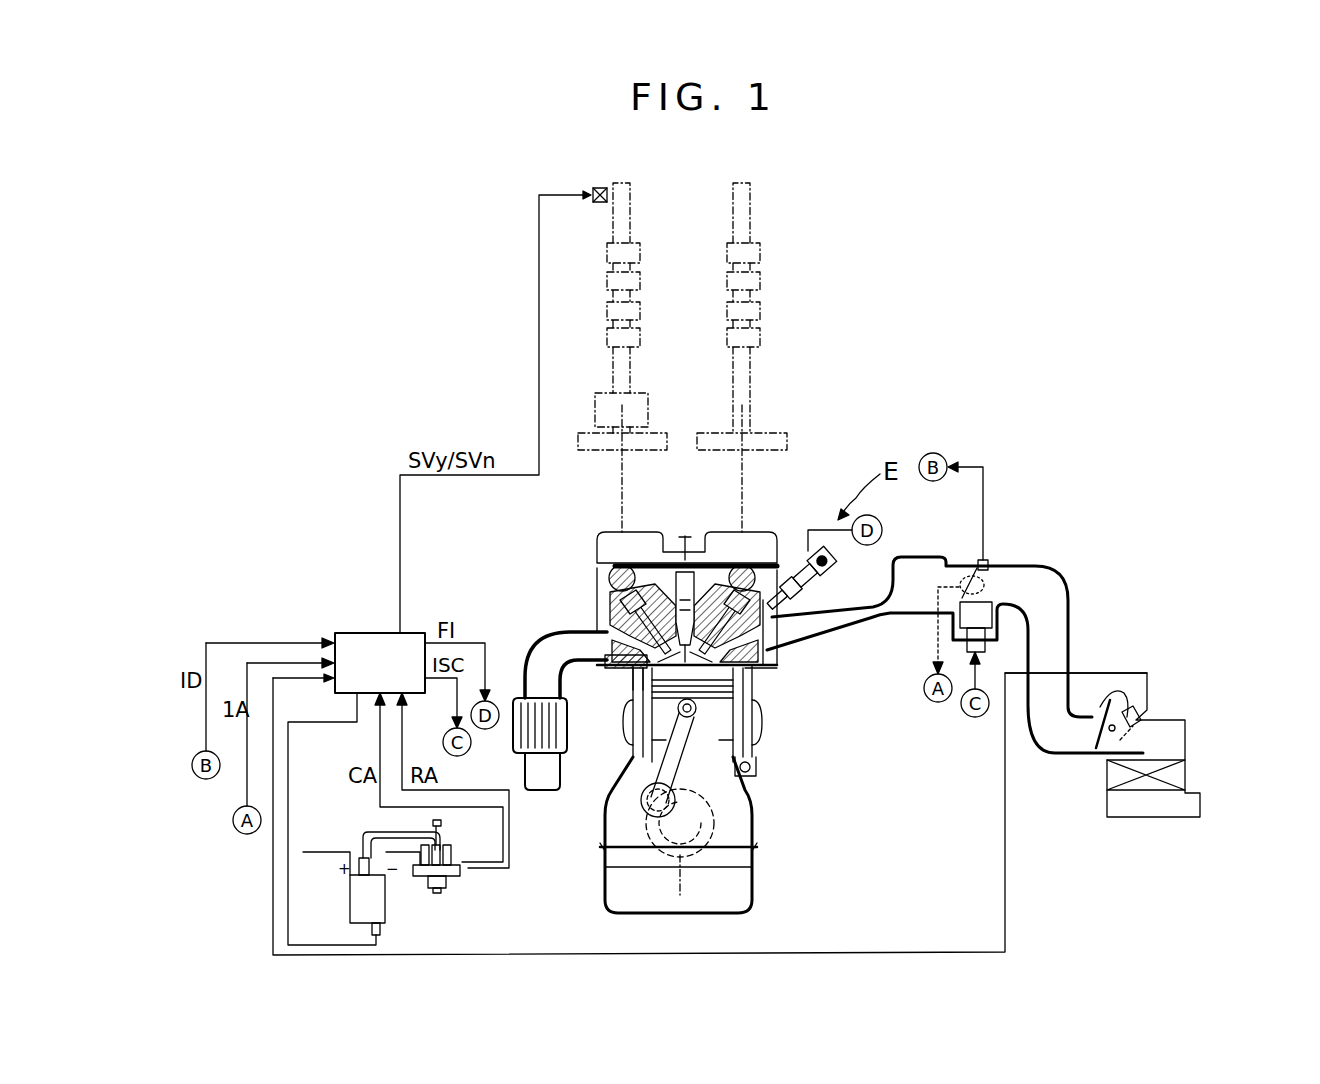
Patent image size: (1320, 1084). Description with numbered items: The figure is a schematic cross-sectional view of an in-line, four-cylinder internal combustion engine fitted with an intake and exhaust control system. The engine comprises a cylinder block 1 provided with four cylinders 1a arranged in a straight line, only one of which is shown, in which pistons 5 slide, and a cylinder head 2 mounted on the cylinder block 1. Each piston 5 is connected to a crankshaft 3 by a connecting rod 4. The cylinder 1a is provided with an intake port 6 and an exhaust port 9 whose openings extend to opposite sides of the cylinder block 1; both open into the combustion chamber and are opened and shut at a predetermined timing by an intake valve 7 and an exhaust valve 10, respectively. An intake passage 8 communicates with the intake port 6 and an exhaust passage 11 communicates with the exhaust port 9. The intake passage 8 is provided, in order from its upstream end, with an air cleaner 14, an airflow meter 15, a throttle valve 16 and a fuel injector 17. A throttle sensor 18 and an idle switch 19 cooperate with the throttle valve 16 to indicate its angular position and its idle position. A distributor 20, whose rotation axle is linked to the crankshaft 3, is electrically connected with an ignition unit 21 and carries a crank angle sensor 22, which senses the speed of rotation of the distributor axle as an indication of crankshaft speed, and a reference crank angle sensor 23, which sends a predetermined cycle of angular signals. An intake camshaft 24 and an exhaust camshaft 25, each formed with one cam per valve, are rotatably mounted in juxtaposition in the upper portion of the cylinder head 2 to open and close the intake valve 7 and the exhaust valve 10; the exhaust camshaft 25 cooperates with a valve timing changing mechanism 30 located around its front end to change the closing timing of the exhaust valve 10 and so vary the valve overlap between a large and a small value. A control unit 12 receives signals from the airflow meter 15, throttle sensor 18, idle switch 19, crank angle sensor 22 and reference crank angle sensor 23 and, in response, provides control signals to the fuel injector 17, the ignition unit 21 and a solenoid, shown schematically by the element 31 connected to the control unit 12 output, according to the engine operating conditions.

The cylinder block 1 is at (730, 752).
The cylinder 1a is at (626, 734).
The cylinder head 2 is at (608, 610).
The crankshaft 3 is at (662, 872).
The connecting rod 4 is at (692, 768).
The piston 5 is at (692, 718).
The intake port 6 is at (760, 650).
The intake valve 7 is at (752, 674).
The intake passage 8 is at (1070, 580).
The exhaust port 9 is at (606, 676).
The exhaust valve 10 is at (632, 686).
The exhaust passage 11 is at (537, 652).
The control unit 12 is at (338, 632).
The air cleaner 14 is at (1195, 744).
The airflow meter 15 is at (1108, 770).
The throttle valve 16 is at (960, 598).
The fuel injector 17 is at (818, 596).
The throttle sensor 18 is at (1006, 572).
The idle switch 19 is at (986, 560).
The distributor 20 is at (428, 884).
The ignition unit 21 is at (348, 905).
The crank angle sensor 22 is at (458, 862).
The reference crank angle sensor 23 is at (457, 876).
The intake camshaft 24 is at (723, 298).
The exhaust camshaft 25 is at (645, 292).
The valve timing changing mechanism 30 is at (652, 407).
The valve actuator 31 is at (596, 190).